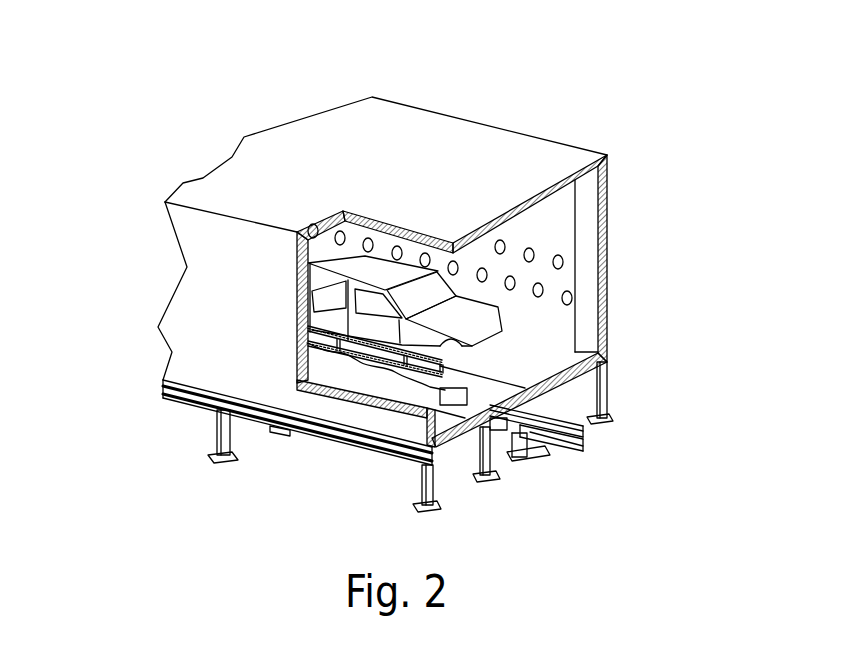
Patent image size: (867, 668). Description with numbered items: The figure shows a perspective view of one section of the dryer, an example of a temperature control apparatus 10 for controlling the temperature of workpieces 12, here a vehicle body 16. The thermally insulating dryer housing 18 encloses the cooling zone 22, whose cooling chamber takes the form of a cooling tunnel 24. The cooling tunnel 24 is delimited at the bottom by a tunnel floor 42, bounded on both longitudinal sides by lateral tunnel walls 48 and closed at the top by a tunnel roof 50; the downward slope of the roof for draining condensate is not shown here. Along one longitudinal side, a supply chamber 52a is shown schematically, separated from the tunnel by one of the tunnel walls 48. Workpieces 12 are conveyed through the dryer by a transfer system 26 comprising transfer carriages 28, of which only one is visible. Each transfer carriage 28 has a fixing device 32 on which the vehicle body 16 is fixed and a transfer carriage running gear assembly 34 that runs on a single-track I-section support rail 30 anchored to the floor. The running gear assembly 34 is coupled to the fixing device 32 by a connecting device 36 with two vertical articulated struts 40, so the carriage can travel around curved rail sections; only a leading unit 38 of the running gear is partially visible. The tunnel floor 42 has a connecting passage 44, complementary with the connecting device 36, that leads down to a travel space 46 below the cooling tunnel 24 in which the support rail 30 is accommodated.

The temperature control apparatus 10 is at (580, 84).
The workpieces 12 is at (405, 246).
The vehicle body 16 is at (408, 272).
The dryer housing 18 is at (262, 152).
The cooling zone 22 is at (191, 379).
The cooling tunnel 24 is at (531, 241).
The transfer system 26 is at (567, 404).
The transfer carriage 28 is at (365, 354).
The support rail 30 is at (573, 437).
The fixing device 32 is at (302, 333).
The transfer carriage running gear assembly 34 is at (501, 449).
The connecting device 36 is at (330, 321).
The leading unit 38 is at (473, 466).
The vertical articulated struts 40 is at (305, 347).
The tunnel floor 42 is at (510, 363).
The connecting passage 44 is at (483, 385).
The travel space 46 is at (290, 457).
The lateral tunnel walls 48 is at (562, 207).
The tunnel roof 50 is at (513, 226).
The supply chamber 52a is at (595, 310).